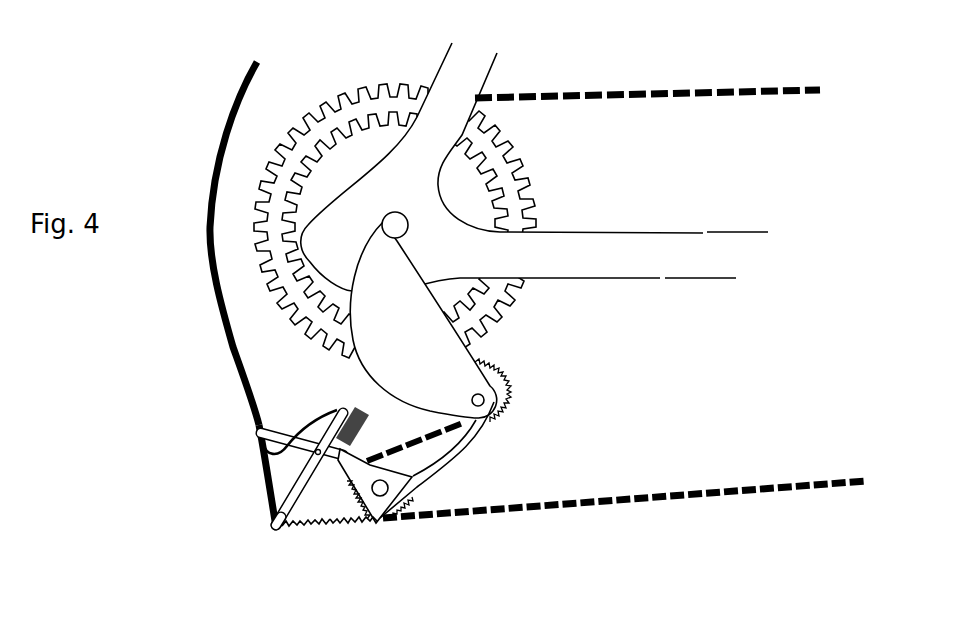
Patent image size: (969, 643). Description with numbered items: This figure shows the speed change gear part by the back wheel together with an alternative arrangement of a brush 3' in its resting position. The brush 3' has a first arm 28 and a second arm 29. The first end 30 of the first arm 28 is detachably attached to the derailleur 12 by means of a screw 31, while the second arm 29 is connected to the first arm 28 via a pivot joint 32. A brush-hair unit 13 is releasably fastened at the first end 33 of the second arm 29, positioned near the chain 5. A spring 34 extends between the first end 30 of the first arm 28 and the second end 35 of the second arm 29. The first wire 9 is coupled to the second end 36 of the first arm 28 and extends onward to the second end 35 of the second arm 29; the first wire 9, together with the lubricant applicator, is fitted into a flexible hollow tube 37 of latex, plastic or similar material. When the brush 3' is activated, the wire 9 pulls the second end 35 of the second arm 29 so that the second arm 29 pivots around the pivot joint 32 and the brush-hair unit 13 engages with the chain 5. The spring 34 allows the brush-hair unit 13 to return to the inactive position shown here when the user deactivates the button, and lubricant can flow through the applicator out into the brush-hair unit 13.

The brush 3' is at (144, 451).
The chain 5 is at (608, 505).
The first wire 9 is at (263, 470).
The derailleur 12 is at (478, 440).
The brush-hair unit 13 is at (362, 412).
The first arm 28 is at (408, 496).
The second arm 29 is at (270, 495).
The first end of the first arm 30 is at (378, 524).
The screw 31 is at (364, 462).
The pivot joint 32 is at (312, 527).
The first end of the second arm 33 is at (337, 408).
The spring 34 is at (339, 527).
The second end of the second arm 35 is at (274, 531).
The second end of the first arm 36 is at (260, 428).
The flexible hollow tube 37 is at (220, 314).